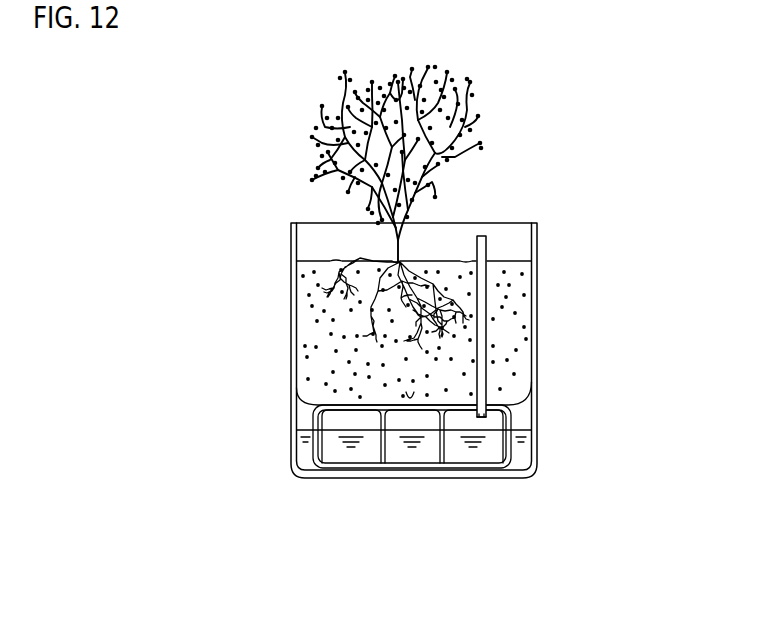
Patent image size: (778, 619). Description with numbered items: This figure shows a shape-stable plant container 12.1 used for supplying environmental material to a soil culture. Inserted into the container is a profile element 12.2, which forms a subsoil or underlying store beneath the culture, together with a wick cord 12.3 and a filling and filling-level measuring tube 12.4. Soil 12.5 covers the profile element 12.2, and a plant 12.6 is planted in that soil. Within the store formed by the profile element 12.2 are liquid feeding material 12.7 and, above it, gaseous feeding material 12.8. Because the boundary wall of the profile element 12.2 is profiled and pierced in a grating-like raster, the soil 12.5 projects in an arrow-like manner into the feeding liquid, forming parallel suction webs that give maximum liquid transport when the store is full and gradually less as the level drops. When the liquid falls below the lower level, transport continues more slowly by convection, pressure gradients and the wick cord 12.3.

The plant container 12.1 is at (296, 262).
The profile element 12.2 is at (352, 407).
The wick cord 12.3 is at (510, 419).
The filling and filling-level measuring tube 12.4 is at (486, 355).
The soil 12.5 is at (508, 290).
The plant 12.6 is at (457, 164).
The liquid feeding material 12.7 is at (358, 456).
The gaseous feeding material 12.8 is at (485, 422).